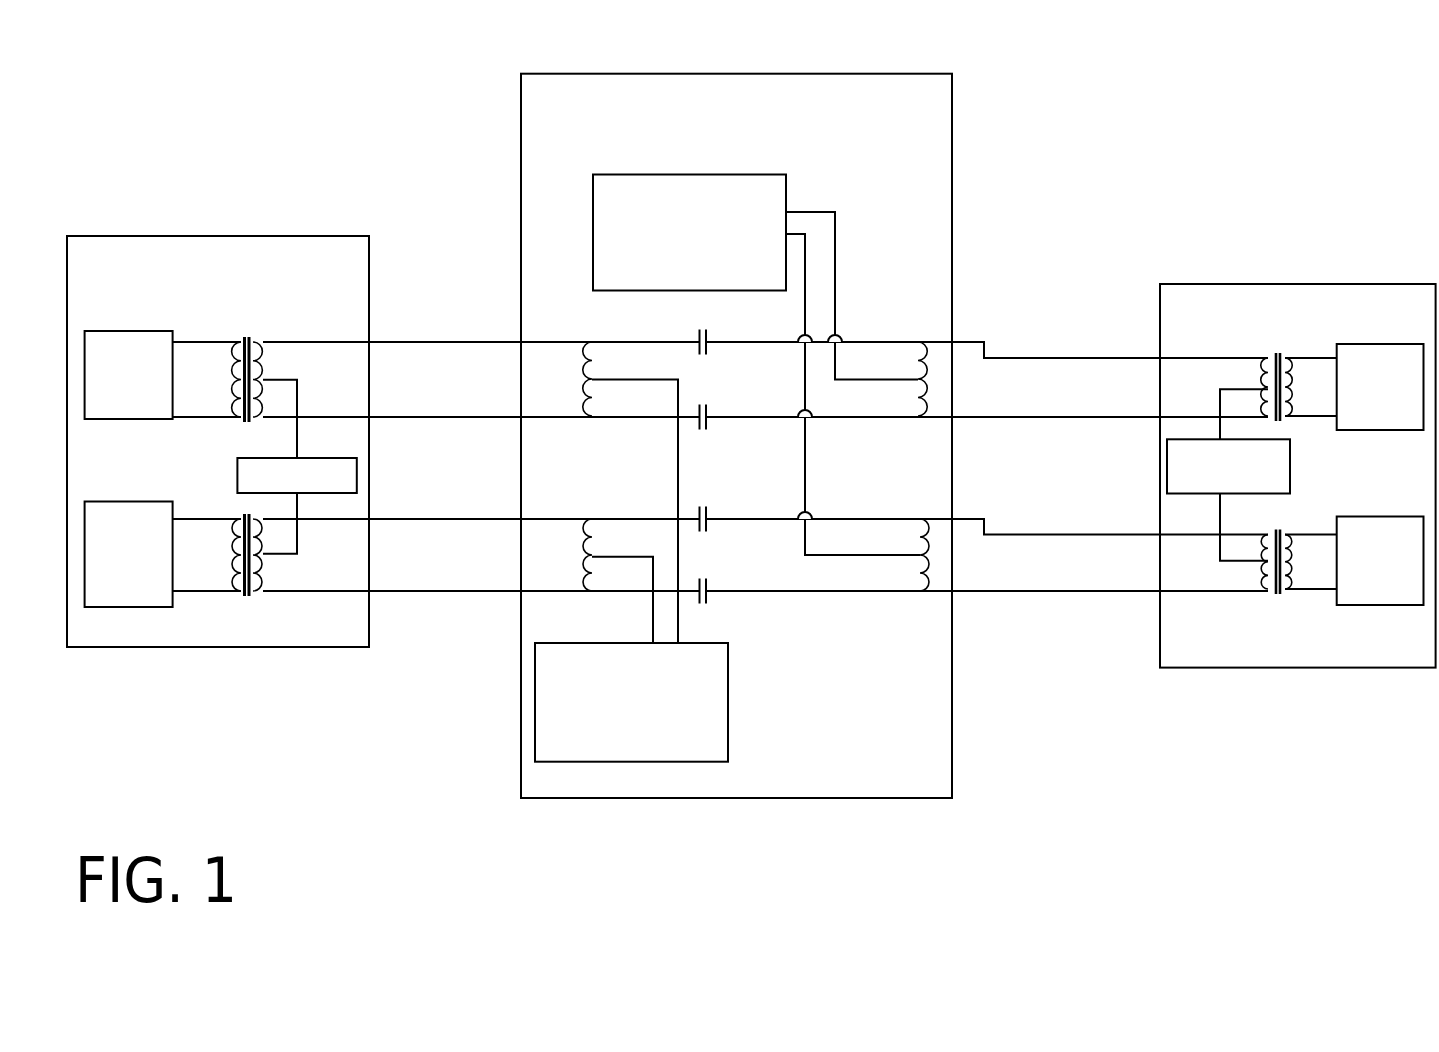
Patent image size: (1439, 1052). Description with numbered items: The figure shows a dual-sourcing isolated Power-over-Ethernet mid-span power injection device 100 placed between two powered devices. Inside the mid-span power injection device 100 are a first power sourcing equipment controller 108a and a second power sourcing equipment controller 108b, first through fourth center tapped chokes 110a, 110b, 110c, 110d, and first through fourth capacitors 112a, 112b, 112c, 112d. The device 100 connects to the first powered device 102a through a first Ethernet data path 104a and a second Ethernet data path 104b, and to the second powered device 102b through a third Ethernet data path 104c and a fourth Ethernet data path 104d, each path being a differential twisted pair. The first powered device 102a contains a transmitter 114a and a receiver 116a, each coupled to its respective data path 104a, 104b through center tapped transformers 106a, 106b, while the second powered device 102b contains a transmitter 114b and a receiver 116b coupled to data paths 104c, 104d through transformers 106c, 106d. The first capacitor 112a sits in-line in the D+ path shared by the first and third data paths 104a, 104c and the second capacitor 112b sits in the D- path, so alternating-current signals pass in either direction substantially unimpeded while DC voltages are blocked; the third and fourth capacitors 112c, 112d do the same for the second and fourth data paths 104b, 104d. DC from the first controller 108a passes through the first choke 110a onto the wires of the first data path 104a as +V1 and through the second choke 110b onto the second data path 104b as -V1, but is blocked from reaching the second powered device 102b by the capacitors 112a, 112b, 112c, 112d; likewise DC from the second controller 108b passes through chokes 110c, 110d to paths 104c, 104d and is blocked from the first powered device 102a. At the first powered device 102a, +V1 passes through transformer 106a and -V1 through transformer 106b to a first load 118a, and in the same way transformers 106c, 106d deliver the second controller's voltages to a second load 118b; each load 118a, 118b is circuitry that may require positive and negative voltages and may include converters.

The mid-span power injection device 100 is at (565, 73).
The first powered device 102a is at (344, 276).
The second powered device 102b is at (1159, 299).
The first Ethernet data path 104a is at (489, 324).
The second Ethernet data path 104b is at (488, 624).
The third Ethernet data path 104c is at (998, 345).
The fourth Ethernet data path 104d is at (1006, 614).
The center tapped transformer 106a is at (230, 402).
The center tapped transformer 106b is at (258, 603).
The center tapped transformer 106c is at (1254, 342).
The center tapped transformer 106d is at (1268, 606).
The first power sourcing equipment controller 108a is at (728, 730).
The second power sourcing equipment controller 108b is at (592, 262).
The first center tapped choke 110a is at (580, 379).
The second center tapped choke 110b is at (578, 555).
The third center tapped choke 110c is at (937, 383).
The fourth center tapped choke 110d is at (928, 540).
The first capacitor 112a is at (710, 334).
The second capacitor 112b is at (710, 408).
The third capacitor 112c is at (710, 512).
The fourth capacitor 112d is at (745, 574).
The transmitter 114a is at (144, 358).
The transmitter 114b is at (1352, 606).
The receiver 116a is at (165, 607).
The receiver 116b is at (1357, 343).
The first load 118a is at (296, 467).
The second load 118b is at (1228, 475).